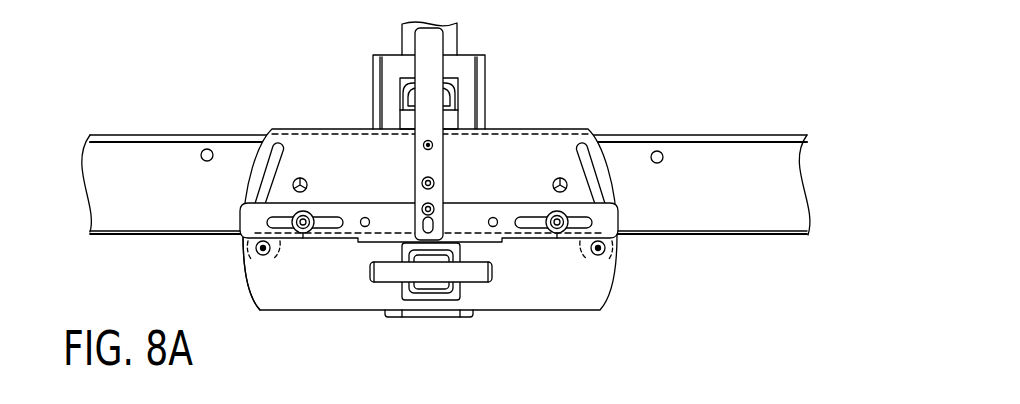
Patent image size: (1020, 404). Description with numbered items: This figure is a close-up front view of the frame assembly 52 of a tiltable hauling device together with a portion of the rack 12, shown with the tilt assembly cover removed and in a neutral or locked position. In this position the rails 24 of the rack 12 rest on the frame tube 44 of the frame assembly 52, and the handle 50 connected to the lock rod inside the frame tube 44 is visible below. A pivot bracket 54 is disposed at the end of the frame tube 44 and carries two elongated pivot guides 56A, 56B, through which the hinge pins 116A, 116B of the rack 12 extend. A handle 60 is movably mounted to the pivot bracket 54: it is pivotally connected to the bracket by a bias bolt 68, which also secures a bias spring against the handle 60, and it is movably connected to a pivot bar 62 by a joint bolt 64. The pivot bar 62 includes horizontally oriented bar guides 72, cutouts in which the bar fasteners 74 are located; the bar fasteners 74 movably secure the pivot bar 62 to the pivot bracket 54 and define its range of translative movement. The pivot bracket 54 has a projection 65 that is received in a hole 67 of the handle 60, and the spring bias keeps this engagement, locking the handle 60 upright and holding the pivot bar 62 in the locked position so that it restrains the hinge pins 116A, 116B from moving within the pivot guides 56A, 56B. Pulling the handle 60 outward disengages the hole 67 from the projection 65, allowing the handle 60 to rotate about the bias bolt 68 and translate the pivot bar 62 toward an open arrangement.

The rack 12 is at (730, 112).
The rails 24 is at (737, 208).
The frame tube 44 is at (430, 295).
The handle 50 is at (473, 282).
The frame assembly 52 is at (366, 327).
The pivot bracket 54 is at (257, 277).
The pivot guide 56A is at (584, 152).
The pivot guide 56B is at (275, 150).
The handle 60 is at (430, 67).
The pivot bar 62 is at (508, 210).
The joint bolt 64 is at (422, 209).
The projection 65 is at (428, 140).
The hole 67 is at (437, 147).
The bias bolt 68 is at (433, 180).
The bar guides 72 is at (328, 221).
The bar fasteners 74 is at (295, 216).
The hinge pin 116A is at (603, 257).
The hinge pin 116B is at (263, 256).